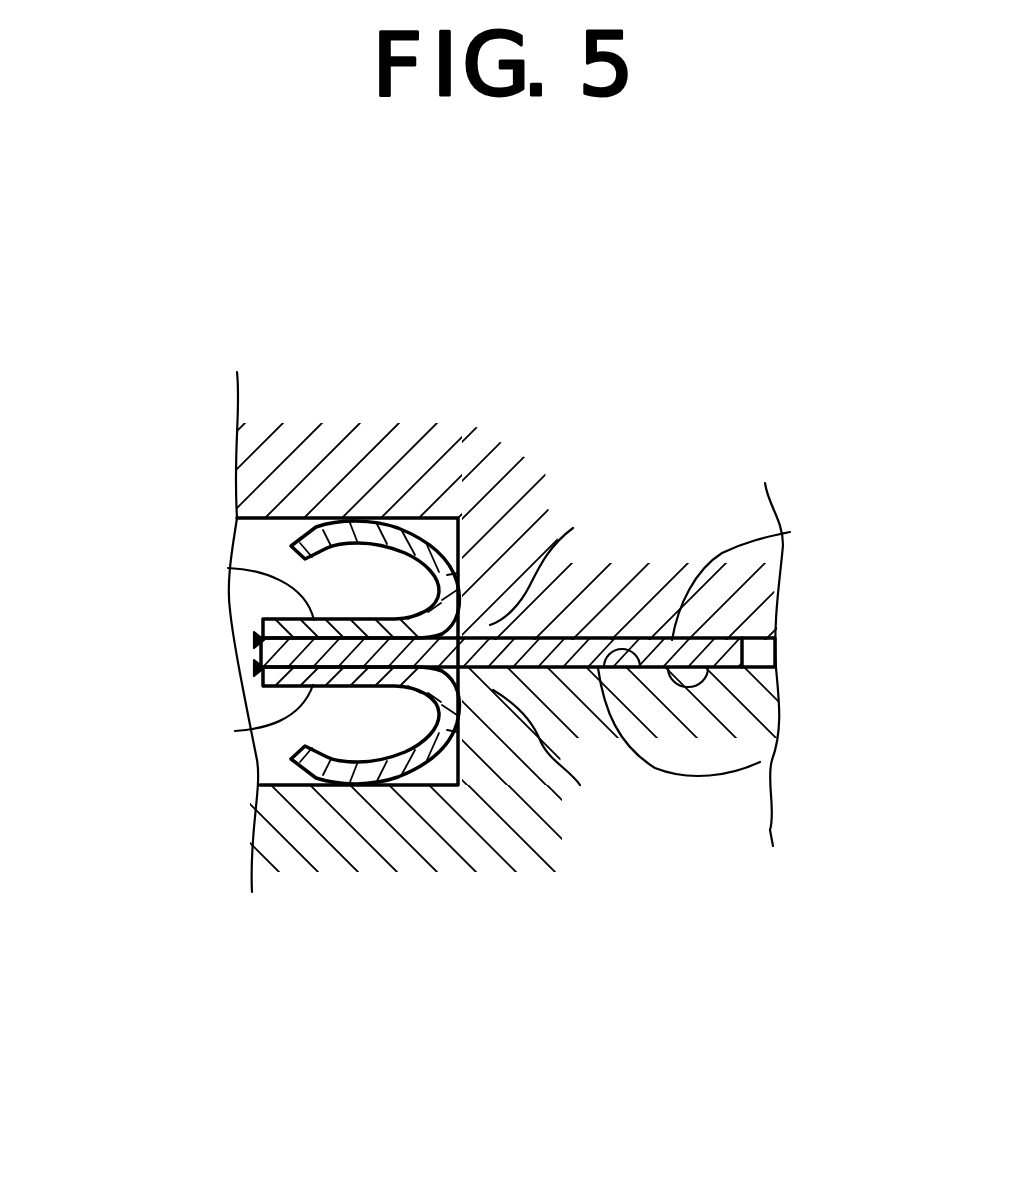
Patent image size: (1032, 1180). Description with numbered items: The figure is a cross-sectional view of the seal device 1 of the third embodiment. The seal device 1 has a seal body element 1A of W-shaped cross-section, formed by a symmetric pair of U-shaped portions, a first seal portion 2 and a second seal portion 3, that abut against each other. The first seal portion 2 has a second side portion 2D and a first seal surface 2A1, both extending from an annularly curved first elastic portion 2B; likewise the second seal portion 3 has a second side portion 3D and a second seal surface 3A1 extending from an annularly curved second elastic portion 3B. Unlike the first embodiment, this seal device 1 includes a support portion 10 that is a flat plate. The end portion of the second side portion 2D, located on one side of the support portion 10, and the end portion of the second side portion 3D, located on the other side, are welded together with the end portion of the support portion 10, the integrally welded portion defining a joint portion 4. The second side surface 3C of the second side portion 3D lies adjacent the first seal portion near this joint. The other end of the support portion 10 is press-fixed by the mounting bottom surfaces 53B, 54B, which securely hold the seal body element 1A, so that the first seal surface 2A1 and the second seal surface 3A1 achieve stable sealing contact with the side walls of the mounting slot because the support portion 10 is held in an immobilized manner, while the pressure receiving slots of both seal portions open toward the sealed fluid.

The seal device 1 is at (591, 376).
The seal body element 1A is at (276, 752).
The first seal portion 2 is at (407, 514).
The first seal surface 2A1 is at (340, 520).
The first elastic portion 2B is at (458, 573).
The second side portion 2D is at (228, 568).
The second seal portion 3 is at (405, 790).
The second seal surface 3A1 is at (336, 786).
The second elastic portion 3B is at (458, 732).
The second side surface 3C is at (555, 657).
The second side portion 3D is at (235, 731).
The joint portion 4 is at (257, 640).
The support portion 10 is at (600, 634).
The mounting bottom surface 53B is at (790, 532).
The mounting bottom surface 54B is at (760, 762).